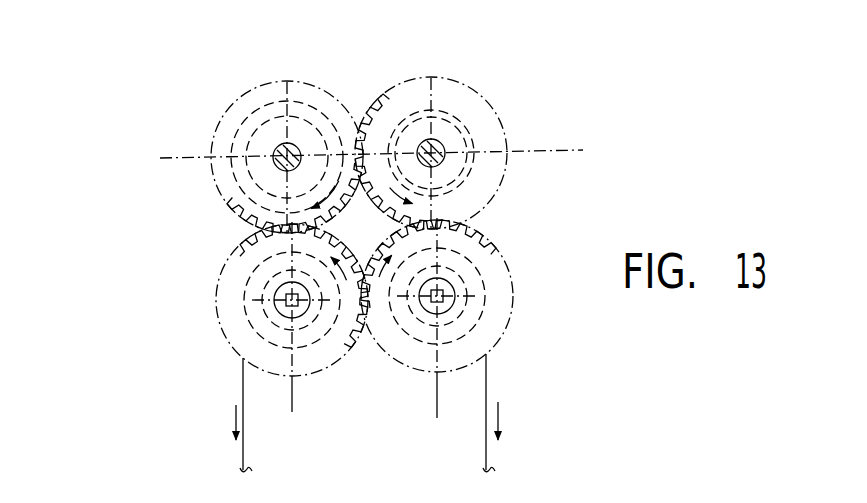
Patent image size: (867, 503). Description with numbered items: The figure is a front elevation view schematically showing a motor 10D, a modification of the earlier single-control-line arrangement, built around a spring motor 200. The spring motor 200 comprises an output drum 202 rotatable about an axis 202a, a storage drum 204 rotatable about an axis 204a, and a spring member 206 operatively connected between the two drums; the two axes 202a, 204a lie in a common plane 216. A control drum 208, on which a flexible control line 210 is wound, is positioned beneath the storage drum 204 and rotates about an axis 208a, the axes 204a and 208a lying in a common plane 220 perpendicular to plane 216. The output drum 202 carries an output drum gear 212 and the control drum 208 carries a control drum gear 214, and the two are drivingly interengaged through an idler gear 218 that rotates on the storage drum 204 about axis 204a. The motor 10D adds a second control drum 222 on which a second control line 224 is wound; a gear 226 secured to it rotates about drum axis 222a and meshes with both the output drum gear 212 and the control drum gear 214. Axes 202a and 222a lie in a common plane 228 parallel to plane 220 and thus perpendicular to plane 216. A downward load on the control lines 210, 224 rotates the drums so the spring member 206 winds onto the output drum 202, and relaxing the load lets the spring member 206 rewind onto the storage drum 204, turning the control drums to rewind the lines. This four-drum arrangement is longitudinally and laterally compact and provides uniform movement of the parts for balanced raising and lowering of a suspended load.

The motor 10D is at (203, 92).
The spring motor 200 is at (338, 84).
The output drum 202 is at (495, 97).
The output drum axis 202a is at (433, 152).
The storage drum 204 is at (258, 73).
The storage drum axis 204a is at (283, 158).
The spring member 206 is at (383, 143).
The control drum 208 is at (207, 335).
The control drum axis 208a is at (206, 300).
The control line 210 is at (245, 455).
The output drum gear 212 is at (365, 118).
The control drum gear 214 is at (357, 332).
The common plane 216 is at (416, 128).
The idler gear 218 is at (263, 227).
The common plane 220 is at (324, 424).
The second control drum 222 is at (513, 347).
The second control drum axis 222a is at (437, 296).
The control line 224 is at (488, 450).
The gear 226 is at (473, 233).
The common plane 228 is at (403, 436).